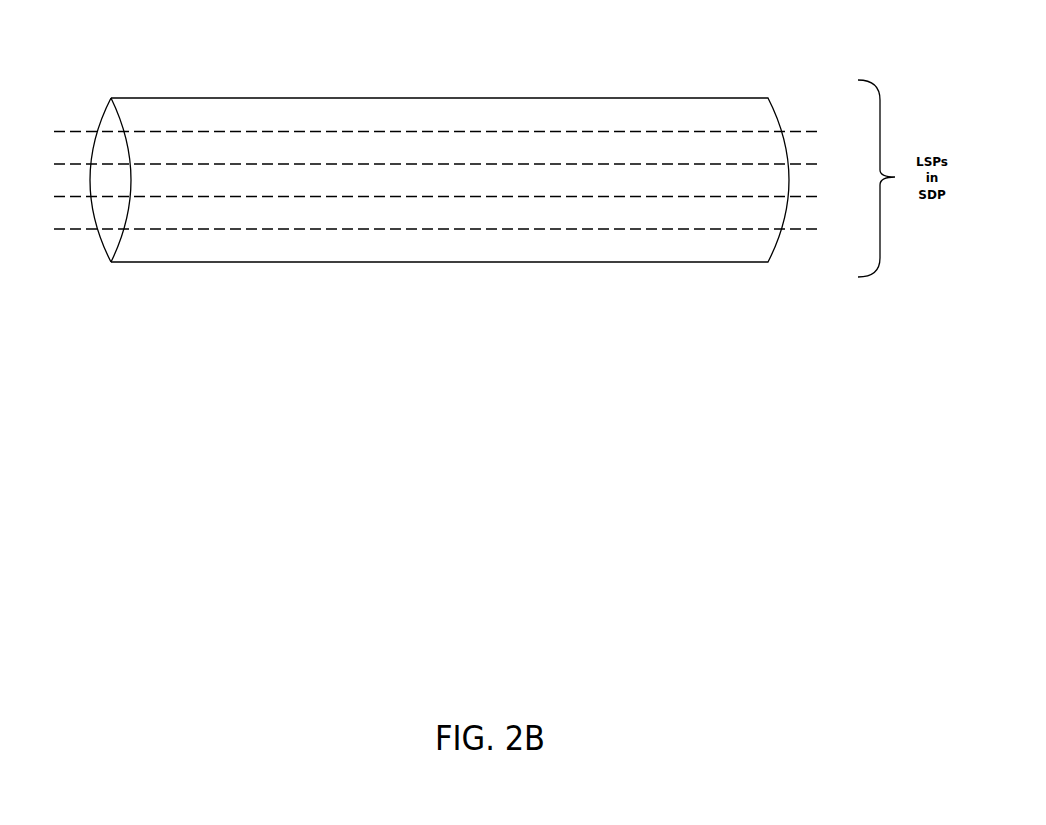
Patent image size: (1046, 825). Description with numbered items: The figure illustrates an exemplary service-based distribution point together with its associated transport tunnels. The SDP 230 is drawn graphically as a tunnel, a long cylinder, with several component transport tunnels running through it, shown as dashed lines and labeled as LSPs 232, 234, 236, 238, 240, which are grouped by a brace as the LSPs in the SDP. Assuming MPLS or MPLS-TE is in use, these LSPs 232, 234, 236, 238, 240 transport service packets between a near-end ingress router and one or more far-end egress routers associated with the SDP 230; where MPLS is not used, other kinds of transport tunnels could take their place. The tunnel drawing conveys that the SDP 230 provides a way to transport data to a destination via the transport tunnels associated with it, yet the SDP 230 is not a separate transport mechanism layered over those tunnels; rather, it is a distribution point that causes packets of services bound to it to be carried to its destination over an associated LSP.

The SDP 230 is at (447, 98).
The LSP 232 is at (797, 112).
The LSP 234 is at (797, 145).
The LSP 236 is at (797, 178).
The LSP 238 is at (797, 210).
The LSP 240 is at (797, 242).